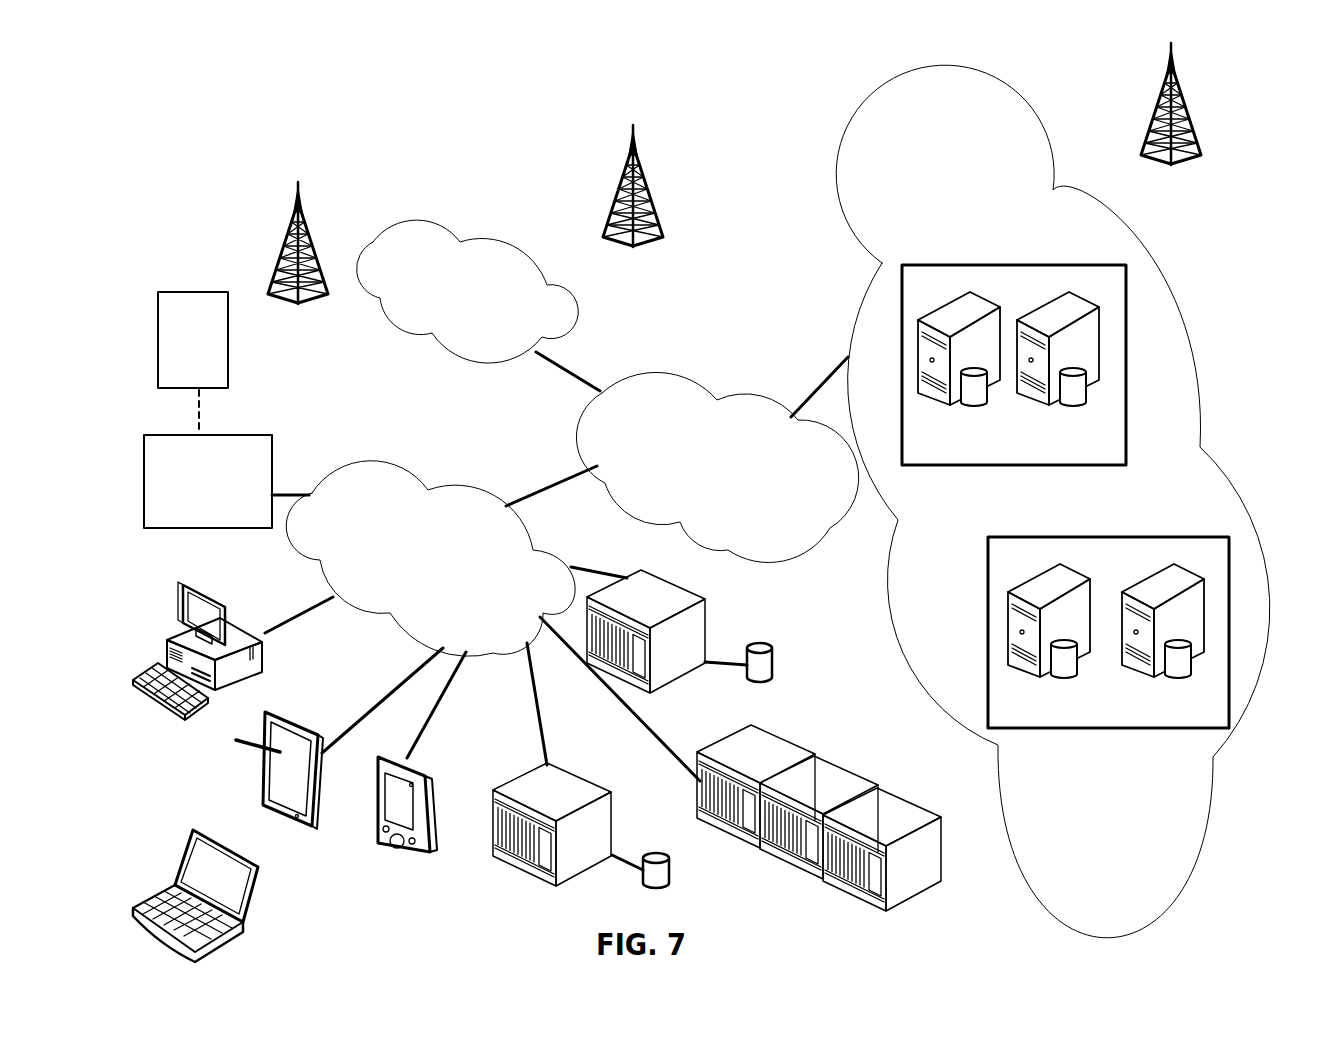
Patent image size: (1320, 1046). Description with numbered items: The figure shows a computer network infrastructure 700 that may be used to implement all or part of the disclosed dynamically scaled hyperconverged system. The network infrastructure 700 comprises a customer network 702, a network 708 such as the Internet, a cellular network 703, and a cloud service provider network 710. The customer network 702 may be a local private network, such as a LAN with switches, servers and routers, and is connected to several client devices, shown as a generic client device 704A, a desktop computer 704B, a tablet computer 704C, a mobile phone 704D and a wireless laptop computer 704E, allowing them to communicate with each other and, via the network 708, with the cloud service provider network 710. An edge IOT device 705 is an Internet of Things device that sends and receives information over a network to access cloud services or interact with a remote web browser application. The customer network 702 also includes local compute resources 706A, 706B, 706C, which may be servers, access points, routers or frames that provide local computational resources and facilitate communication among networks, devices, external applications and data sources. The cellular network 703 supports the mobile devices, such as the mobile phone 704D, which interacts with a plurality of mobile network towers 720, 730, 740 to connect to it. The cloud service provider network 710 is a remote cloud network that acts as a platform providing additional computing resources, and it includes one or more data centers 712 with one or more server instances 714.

The network infrastructure 700 is at (383, 155).
The customer network 702 is at (400, 466).
The cellular network 703 is at (488, 244).
The client device 704A is at (236, 435).
The desktop computer 704B is at (210, 592).
The tablet computer 704C is at (300, 712).
The mobile phone 704D is at (428, 777).
The laptop computer 704E is at (264, 880).
The edge IOT device 705 is at (172, 292).
The local compute resource 706A is at (553, 793).
The local compute resource 706B is at (706, 618).
The local compute resource 706C is at (774, 735).
The network 708 is at (672, 350).
The cloud service provider network 710 is at (1170, 266).
The data center 712 is at (1065, 474).
The server instance 714 is at (968, 405).
The mobile network tower 720 is at (633, 206).
The mobile network tower 730 is at (298, 262).
The mobile network tower 740 is at (1171, 124).